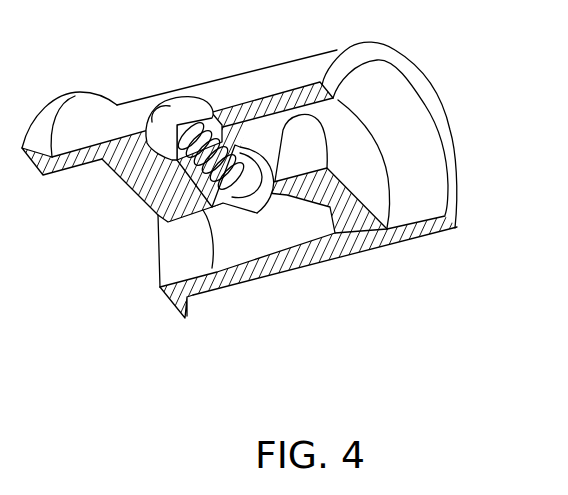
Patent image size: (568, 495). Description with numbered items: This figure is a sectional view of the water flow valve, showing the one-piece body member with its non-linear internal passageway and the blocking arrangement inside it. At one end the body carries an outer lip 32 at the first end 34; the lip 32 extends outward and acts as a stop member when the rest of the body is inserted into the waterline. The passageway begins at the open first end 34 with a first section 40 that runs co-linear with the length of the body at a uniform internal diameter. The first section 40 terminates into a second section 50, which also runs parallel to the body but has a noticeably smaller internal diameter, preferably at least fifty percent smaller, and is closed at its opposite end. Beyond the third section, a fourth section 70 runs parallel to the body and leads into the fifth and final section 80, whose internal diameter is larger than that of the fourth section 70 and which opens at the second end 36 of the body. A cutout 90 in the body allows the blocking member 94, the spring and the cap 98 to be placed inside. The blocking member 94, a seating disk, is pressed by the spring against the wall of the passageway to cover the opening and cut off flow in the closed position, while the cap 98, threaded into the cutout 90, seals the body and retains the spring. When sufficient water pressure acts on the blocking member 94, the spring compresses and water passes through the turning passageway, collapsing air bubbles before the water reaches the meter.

The lip 32 is at (58, 123).
The first end 34 is at (157, 258).
The second end 36 is at (449, 157).
The first section 40 is at (193, 262).
The second section 50 is at (280, 233).
The fourth section 70 is at (302, 150).
The fifth section 80 is at (402, 115).
The cutout 90 is at (185, 110).
The blocking member 94 is at (157, 233).
The cap 98 is at (162, 130).